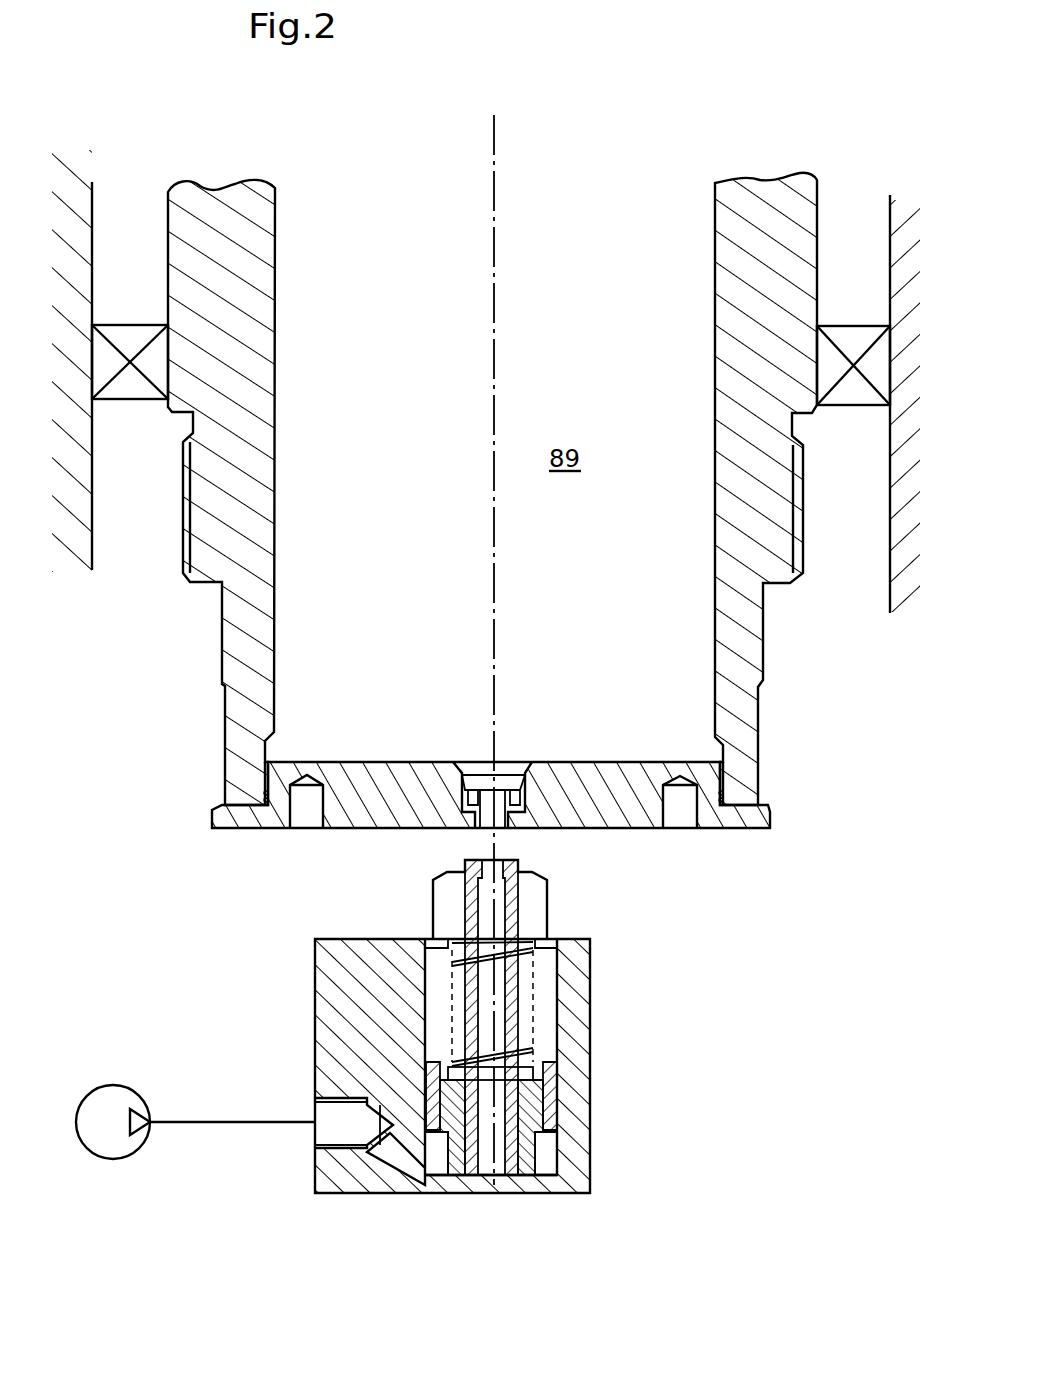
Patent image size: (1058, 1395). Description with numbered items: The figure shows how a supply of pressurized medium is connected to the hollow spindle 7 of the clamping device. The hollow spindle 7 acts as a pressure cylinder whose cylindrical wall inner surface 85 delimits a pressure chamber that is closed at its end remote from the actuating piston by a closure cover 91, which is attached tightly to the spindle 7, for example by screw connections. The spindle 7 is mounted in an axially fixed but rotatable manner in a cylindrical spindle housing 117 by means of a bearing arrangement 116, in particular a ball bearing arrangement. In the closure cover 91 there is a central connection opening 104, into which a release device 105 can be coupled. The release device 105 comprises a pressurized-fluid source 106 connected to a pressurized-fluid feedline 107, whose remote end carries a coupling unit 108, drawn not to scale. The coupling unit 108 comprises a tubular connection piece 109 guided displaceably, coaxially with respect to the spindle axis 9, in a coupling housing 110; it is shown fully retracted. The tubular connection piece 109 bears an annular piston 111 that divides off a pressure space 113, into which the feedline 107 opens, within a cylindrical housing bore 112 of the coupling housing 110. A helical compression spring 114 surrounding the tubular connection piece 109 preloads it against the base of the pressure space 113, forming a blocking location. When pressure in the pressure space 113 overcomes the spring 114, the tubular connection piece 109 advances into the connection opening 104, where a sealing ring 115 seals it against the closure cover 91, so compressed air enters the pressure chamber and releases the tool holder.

The hollow spindle 7 is at (763, 657).
The spindle axis 9 is at (496, 287).
The wall inner surface 85 is at (717, 325).
The closure cover 91 is at (598, 812).
The connection opening 104 is at (503, 778).
The release device 105 is at (622, 1063).
The pressurized-fluid source 106 is at (122, 1086).
The pressurized-fluid feedline 107 is at (214, 1125).
The coupling unit 108 is at (315, 975).
The tubular connection piece 109 is at (553, 893).
The coupling housing 110 is at (590, 970).
The annular piston 111 is at (557, 1108).
The housing bore 112 is at (545, 1031).
The pressure space 113 is at (545, 1158).
The helical compression spring 114 is at (535, 1000).
The sealing ring 115 is at (462, 827).
The bearing arrangement 116 is at (840, 405).
The spindle housing 117 is at (890, 585).